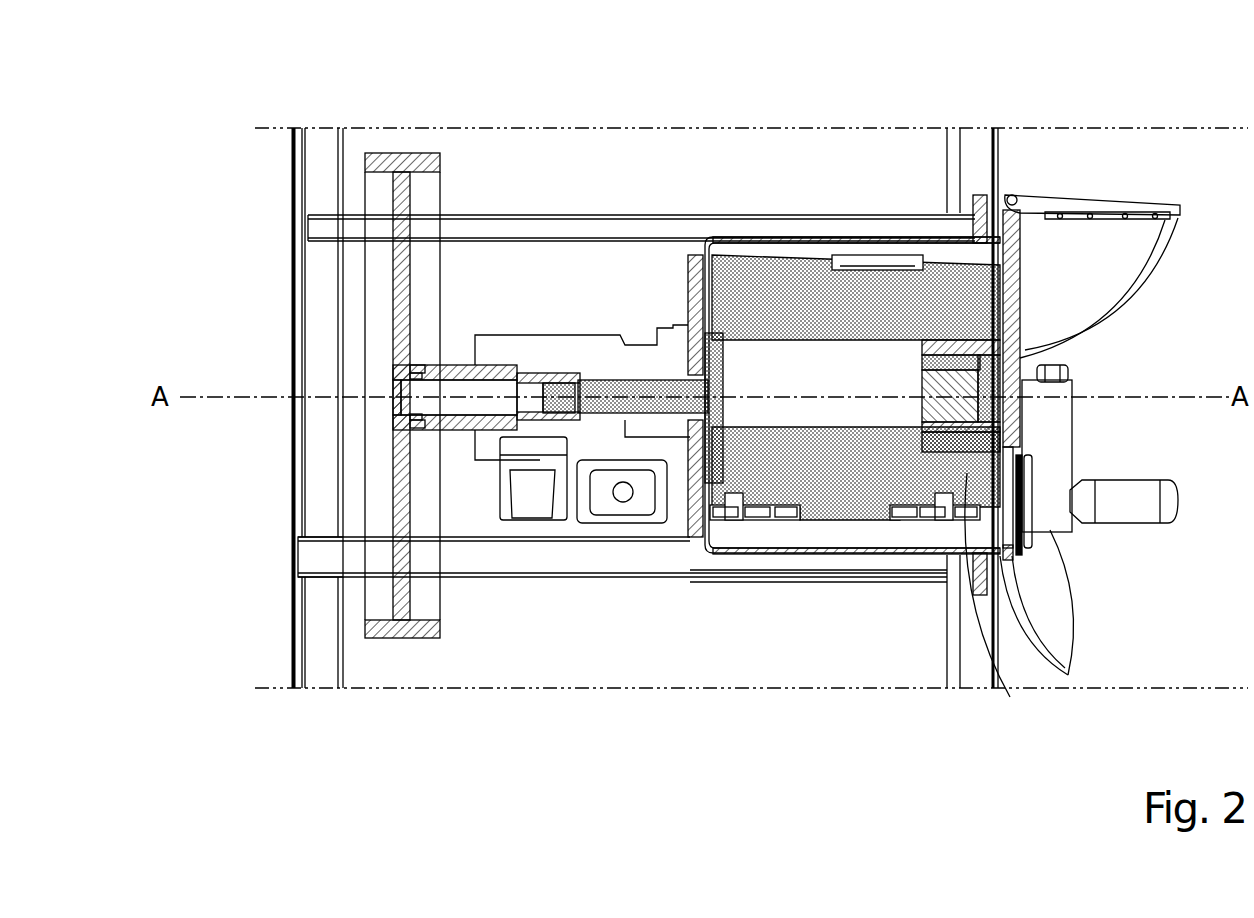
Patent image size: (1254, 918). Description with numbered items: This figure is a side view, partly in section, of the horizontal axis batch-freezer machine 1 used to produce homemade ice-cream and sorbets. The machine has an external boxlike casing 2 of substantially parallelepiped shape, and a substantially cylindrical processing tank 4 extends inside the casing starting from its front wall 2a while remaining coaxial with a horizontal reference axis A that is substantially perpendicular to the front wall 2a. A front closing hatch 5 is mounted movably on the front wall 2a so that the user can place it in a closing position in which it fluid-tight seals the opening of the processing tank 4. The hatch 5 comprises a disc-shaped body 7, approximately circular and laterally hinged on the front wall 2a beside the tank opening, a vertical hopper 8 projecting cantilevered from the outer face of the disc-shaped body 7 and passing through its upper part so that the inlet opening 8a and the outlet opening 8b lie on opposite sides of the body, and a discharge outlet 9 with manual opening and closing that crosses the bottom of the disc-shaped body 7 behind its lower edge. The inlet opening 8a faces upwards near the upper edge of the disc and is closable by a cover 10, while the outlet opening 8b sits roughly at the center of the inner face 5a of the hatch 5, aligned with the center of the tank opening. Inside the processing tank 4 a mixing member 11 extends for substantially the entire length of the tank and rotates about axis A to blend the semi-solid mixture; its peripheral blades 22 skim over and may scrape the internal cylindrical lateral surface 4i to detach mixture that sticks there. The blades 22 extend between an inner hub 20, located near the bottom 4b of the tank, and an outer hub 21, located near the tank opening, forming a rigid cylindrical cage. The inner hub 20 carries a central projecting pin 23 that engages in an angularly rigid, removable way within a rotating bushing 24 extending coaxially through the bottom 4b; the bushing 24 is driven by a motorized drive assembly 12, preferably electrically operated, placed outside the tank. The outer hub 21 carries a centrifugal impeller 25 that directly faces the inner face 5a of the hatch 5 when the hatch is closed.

The batch-freezer machine 1 is at (183, 143).
The boxlike casing 2 is at (303, 135).
The front wall 2a is at (1001, 152).
The processing tank 4 is at (745, 552).
The bottom of the processing tank 4b is at (711, 321).
The internal cylindrical lateral surface 4i is at (831, 546).
The front closing hatch 5 is at (1078, 418).
The inner face of the closing hatch 5a is at (997, 291).
The disc-shaped body 7 is at (1020, 250).
The vertical hopper 8 is at (1140, 280).
The inlet opening of the hopper 8a is at (1150, 214).
The outlet opening of the hopper 8b is at (1010, 353).
The discharge outlet 9 is at (1039, 506).
The cover 10 is at (1115, 205).
The mixing member 11 is at (780, 253).
The motorized drive assembly 12 is at (380, 352).
The inner hub 20 is at (713, 363).
The outer hub 21 is at (921, 407).
The peripheral blades 22 is at (893, 263).
The central projecting pin 23 is at (640, 405).
The rotating bushing 24 is at (530, 415).
The centrifugal impeller 25 is at (980, 386).